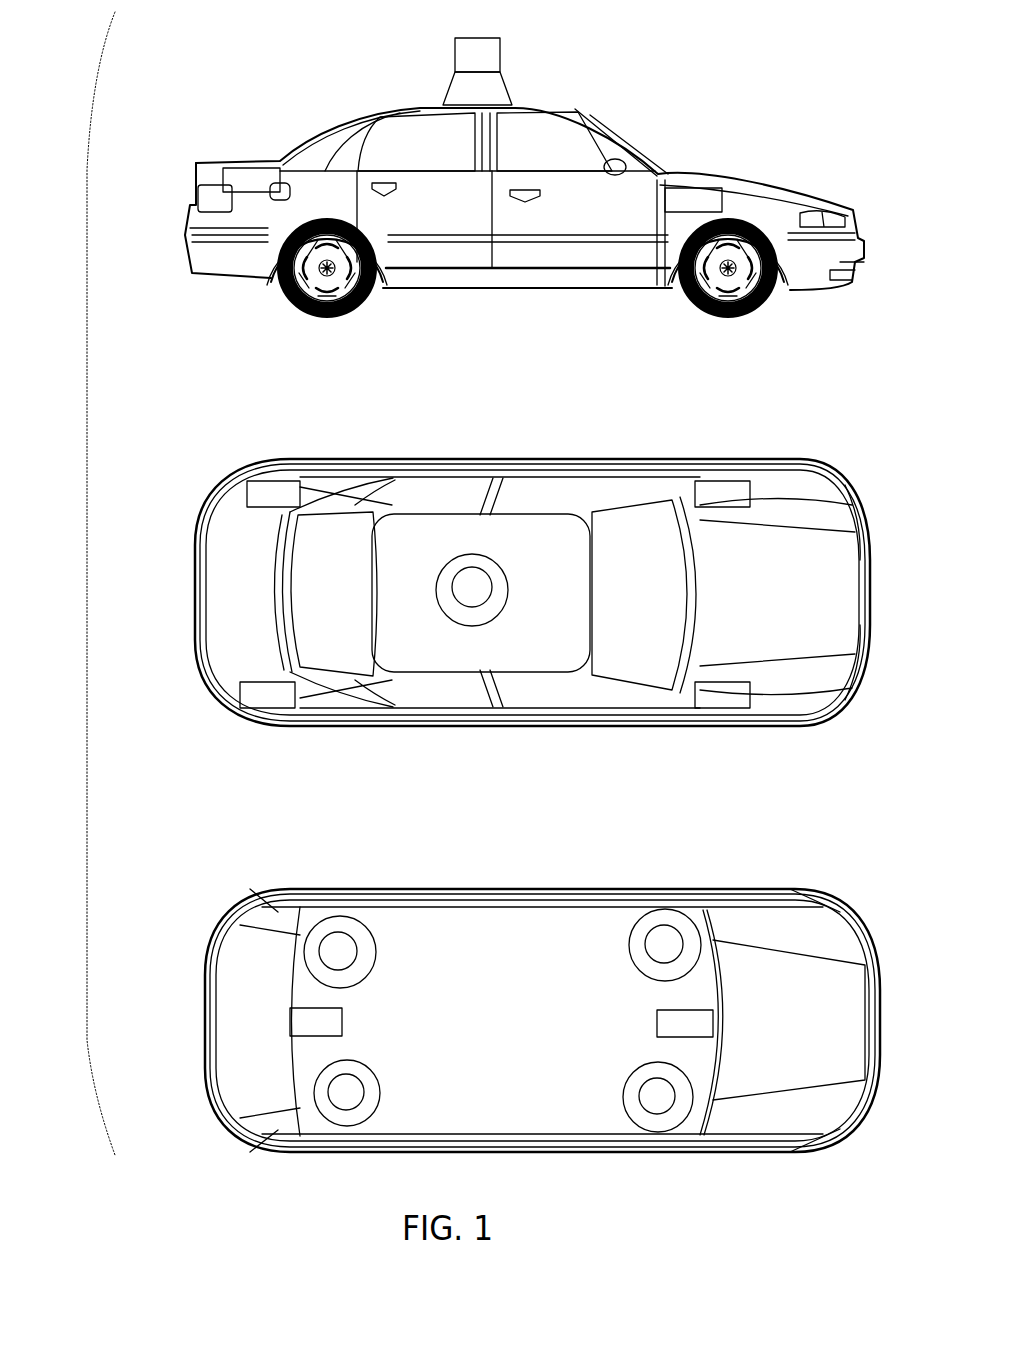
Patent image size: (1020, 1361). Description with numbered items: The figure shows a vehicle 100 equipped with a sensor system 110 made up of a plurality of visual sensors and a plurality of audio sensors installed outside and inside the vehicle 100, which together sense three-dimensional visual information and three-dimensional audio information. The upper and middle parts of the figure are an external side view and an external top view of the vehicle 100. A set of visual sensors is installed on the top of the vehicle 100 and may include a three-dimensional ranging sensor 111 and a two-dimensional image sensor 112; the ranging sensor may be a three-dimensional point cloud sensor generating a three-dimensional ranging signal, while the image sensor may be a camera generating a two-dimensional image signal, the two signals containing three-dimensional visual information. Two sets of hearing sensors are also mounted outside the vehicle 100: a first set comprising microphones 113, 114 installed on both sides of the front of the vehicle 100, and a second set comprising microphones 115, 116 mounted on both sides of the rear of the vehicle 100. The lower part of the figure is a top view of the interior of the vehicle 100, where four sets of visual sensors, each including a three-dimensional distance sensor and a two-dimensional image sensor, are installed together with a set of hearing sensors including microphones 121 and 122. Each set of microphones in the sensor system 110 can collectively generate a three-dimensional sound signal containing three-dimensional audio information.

The vehicle 100 is at (853, 208).
The sensor system 110 is at (87, 583).
The three-dimensional ranging sensor 111 is at (510, 98).
The two-dimensional image sensor 112 is at (456, 52).
The microphone 113 is at (720, 481).
The microphone 114 is at (700, 188).
The microphone 115 is at (275, 481).
The microphone 116 is at (262, 168).
The microphone 121 is at (657, 1022).
The microphone 122 is at (342, 1020).